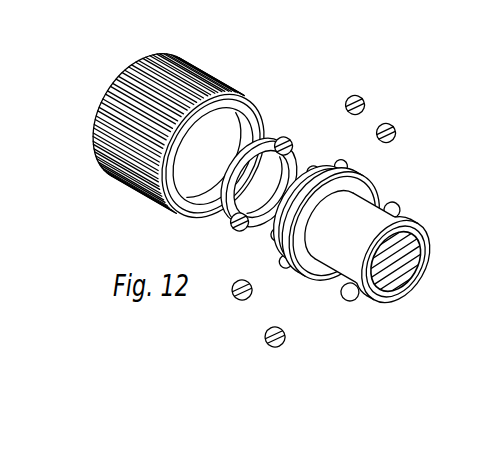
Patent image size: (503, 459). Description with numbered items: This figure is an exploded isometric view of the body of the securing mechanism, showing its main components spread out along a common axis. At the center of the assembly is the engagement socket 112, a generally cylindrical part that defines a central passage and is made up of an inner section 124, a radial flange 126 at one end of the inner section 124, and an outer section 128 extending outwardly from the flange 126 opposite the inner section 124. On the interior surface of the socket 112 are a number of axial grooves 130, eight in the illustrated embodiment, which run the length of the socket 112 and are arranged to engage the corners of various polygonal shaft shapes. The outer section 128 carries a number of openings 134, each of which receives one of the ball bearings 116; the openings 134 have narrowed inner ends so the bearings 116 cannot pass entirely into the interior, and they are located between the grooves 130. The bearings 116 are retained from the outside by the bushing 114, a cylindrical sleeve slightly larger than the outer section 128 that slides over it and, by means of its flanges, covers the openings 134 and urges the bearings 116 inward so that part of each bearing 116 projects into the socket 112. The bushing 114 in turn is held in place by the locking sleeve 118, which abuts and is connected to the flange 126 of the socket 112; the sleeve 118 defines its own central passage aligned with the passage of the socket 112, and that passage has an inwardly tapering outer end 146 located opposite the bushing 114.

The engagement socket 112 is at (383, 188).
The bushing 114 is at (223, 223).
The ball bearings 116 is at (392, 126).
The locking sleeve 118 is at (205, 72).
The inner section 124 is at (403, 224).
The radial flange 126 is at (303, 288).
The outer section 128 is at (276, 242).
The axial grooves 130 is at (424, 277).
The openings 134 is at (307, 176).
The inwardly tapering outer end 146 is at (107, 165).